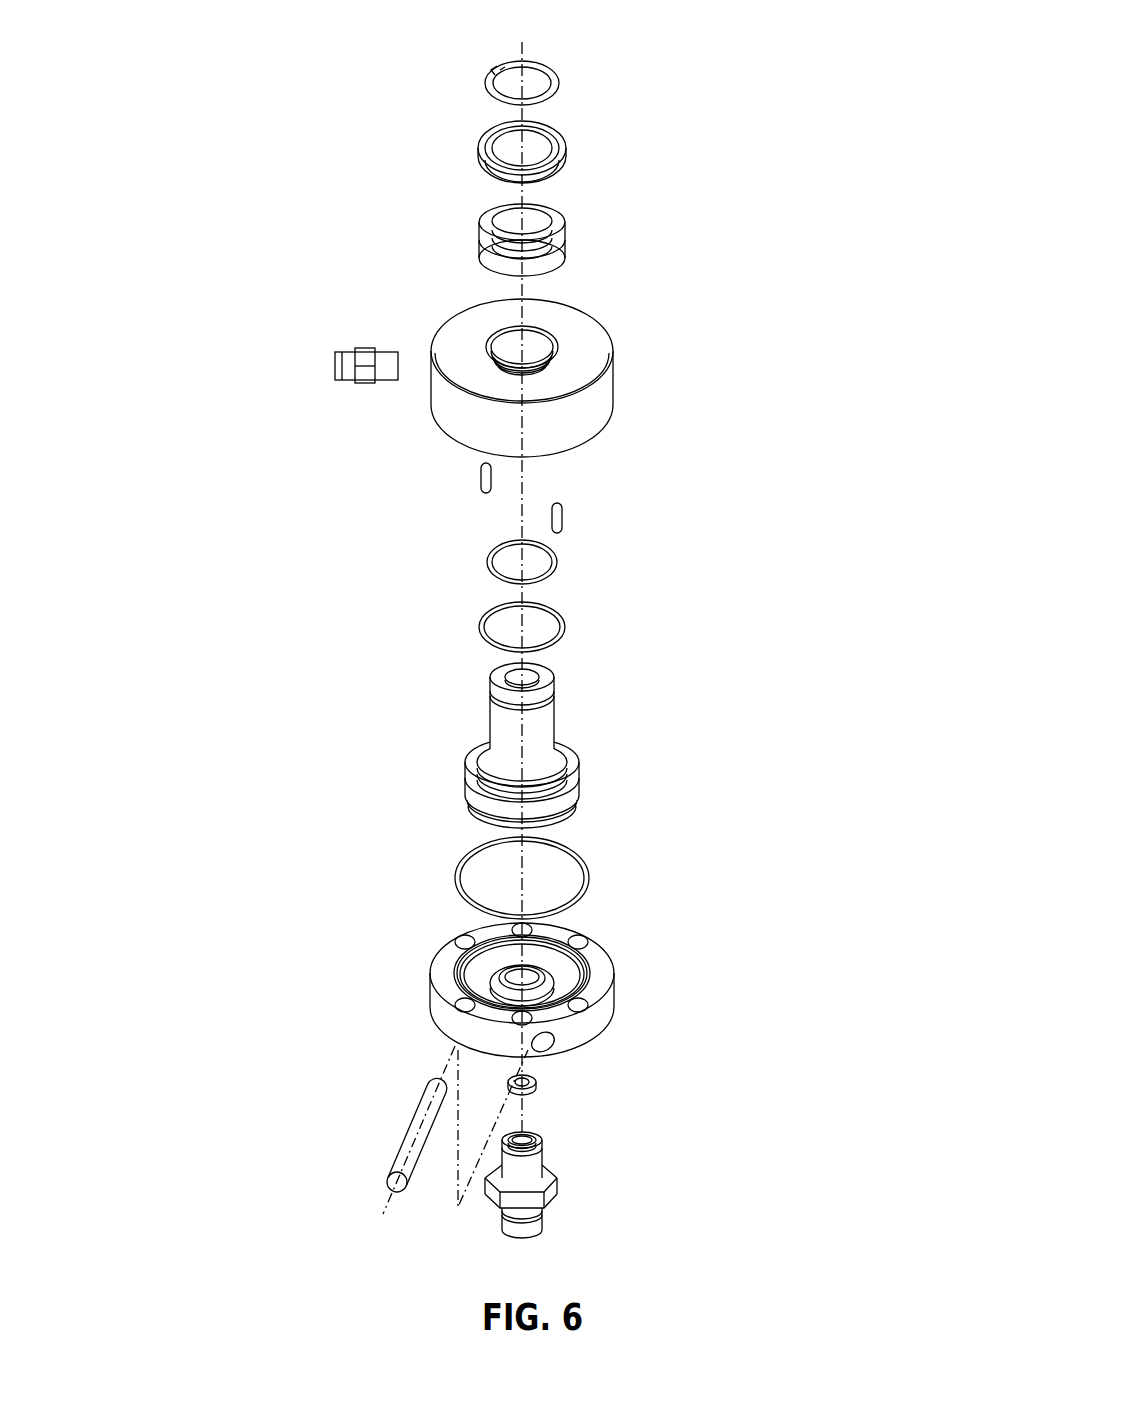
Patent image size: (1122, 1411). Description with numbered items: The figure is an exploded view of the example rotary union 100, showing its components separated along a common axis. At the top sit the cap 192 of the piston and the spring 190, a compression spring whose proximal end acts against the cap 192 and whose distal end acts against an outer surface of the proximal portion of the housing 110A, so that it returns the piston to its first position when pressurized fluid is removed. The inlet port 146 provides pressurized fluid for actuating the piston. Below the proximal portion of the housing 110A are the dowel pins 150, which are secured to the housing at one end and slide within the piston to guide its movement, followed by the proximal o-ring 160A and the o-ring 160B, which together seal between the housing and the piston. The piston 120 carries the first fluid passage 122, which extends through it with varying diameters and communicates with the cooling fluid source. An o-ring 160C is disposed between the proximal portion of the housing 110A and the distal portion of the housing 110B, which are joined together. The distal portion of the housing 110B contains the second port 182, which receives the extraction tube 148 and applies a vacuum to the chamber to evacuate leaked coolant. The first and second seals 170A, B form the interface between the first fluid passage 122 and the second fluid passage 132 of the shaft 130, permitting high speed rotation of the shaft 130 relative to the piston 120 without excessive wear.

The rotary union 100 is at (670, 40).
The cap 192 is at (572, 140).
The spring 190 is at (572, 220).
The proximal portion of the housing 110A is at (616, 341).
The inlet port 146 is at (346, 336).
The dowel pin 150 is at (582, 511).
The proximal o-ring 160A is at (575, 559).
The o-ring 160B is at (582, 627).
The first fluid passage 122 is at (430, 642).
The piston 120 is at (415, 712).
The o-ring 160C is at (600, 859).
The distal portion of the housing 110B is at (591, 977).
The second port 182 is at (573, 1028).
The first and second seals 170A, B is at (548, 1078).
The extraction tube 148 is at (395, 1129).
The second fluid passage 132 is at (540, 1118).
The shaft 130 is at (611, 1172).